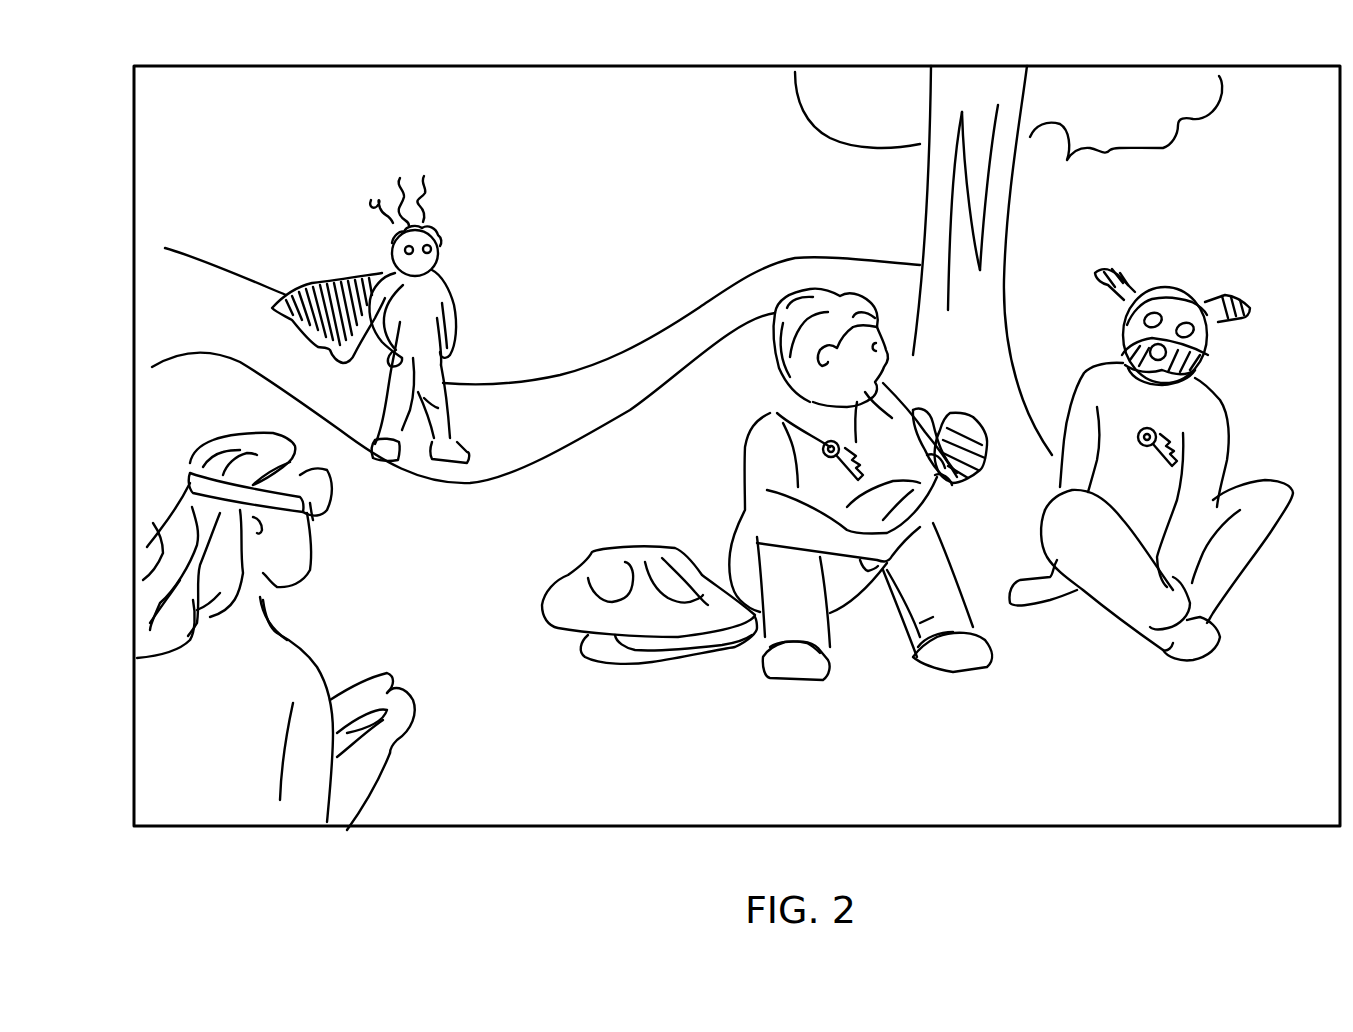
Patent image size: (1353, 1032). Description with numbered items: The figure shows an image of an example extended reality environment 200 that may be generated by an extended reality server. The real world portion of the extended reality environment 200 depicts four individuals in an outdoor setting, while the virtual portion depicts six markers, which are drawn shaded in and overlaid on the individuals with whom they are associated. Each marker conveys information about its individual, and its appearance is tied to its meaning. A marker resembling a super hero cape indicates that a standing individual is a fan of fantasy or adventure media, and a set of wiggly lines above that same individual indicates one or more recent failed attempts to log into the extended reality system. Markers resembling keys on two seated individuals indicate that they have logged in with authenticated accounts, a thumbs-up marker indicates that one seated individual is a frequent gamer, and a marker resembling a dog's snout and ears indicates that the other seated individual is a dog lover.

The extended reality environment 200 is at (112, 50).